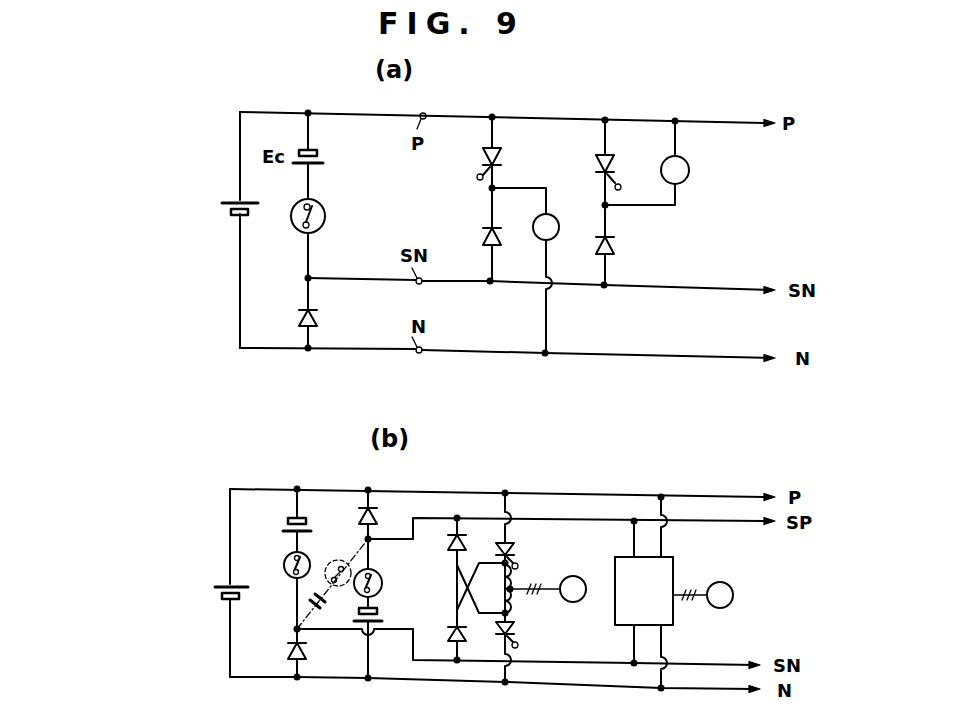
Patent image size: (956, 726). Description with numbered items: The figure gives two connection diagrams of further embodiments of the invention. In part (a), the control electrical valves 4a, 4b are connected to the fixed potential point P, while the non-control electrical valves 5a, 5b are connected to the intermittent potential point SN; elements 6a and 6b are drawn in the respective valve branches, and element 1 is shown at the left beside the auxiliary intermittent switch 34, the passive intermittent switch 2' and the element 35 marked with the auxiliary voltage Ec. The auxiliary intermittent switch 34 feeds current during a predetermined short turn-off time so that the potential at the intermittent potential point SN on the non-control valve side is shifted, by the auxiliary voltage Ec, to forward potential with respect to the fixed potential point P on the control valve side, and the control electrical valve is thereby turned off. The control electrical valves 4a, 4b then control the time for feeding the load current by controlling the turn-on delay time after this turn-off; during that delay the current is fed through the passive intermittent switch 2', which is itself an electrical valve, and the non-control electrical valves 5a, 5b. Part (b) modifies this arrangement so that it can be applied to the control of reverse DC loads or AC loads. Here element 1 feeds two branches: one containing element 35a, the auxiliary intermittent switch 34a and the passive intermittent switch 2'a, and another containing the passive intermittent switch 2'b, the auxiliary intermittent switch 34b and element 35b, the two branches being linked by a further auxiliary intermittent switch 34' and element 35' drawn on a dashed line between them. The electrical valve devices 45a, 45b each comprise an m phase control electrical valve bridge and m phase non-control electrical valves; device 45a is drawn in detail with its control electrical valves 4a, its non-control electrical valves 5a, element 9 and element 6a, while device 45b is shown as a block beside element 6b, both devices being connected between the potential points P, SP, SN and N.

The battery 1 is at (224, 209).
The capacitor Ec 35 is at (325, 157).
The auxiliary intermittent switch 34 is at (330, 216).
The passive intermittent switch 2' is at (325, 323).
The control electrical valve 4a is at (503, 160).
The non-control electrical valve 5a is at (503, 240).
The lamp 6a is at (555, 238).
The control electrical valve 4b is at (616, 163).
The non-control electrical valve 5b is at (615, 248).
The lamp 6b is at (690, 171).
The capacitor 35a is at (287, 523).
The auxiliary intermittent switch 34a is at (290, 556).
The auxiliary intermittent switch 34' is at (332, 580).
The capacitor 35' is at (327, 632).
The passive intermittent switch 2'a is at (273, 651).
The passive intermittent switch 2'b is at (386, 513).
The auxiliary intermittent switch 34b is at (382, 583).
The capacitor 35b is at (383, 615).
The electrical valve device 45a is at (495, 483).
The relay coil 9 is at (513, 594).
The electrical valve device 45b is at (666, 613).